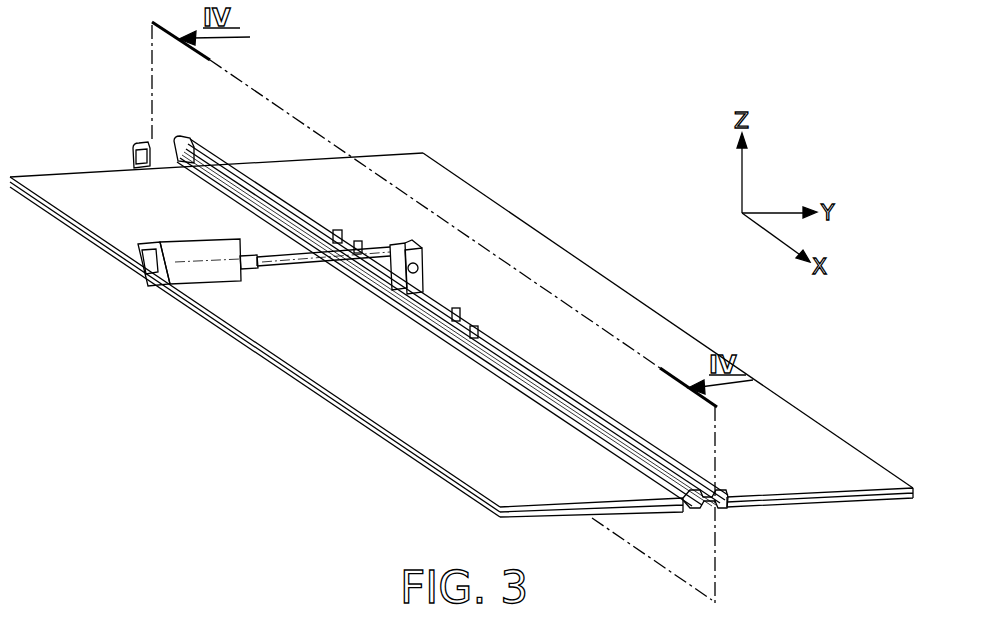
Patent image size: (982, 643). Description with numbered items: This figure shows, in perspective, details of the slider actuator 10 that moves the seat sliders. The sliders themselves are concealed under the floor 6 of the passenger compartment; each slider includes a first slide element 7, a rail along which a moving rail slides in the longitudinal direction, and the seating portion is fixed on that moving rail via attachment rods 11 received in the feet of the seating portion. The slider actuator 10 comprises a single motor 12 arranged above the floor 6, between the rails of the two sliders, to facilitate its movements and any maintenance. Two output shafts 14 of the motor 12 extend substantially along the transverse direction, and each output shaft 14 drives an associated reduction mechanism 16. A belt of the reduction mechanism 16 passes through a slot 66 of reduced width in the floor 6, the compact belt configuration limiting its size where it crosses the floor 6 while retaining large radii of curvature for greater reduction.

The floor 6 is at (468, 412).
The first slide element 7 is at (150, 158).
The slider actuator 10 is at (300, 458).
The attachment rods 11 is at (357, 242).
The motor 12 is at (193, 260).
The output shaft 14 is at (287, 258).
The reduction mechanism 16 is at (387, 285).
The slot 66 is at (253, 167).